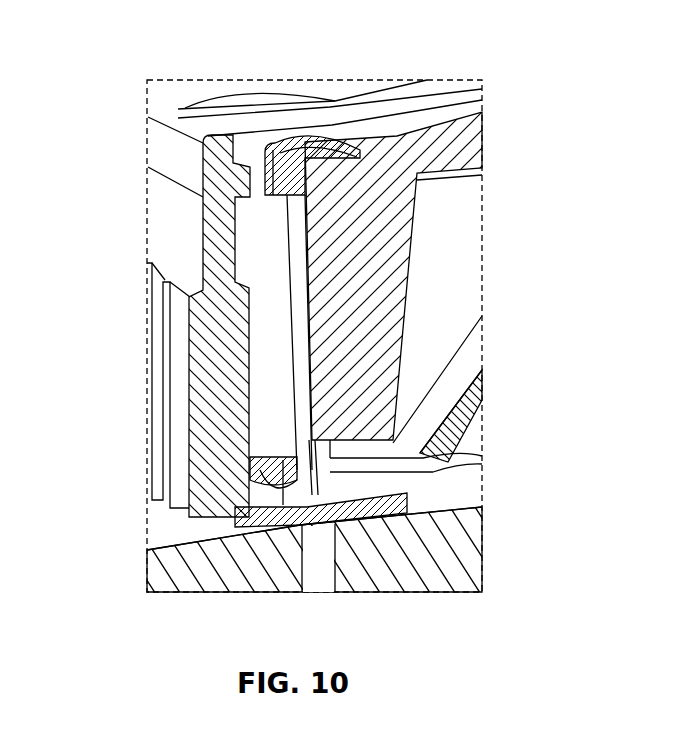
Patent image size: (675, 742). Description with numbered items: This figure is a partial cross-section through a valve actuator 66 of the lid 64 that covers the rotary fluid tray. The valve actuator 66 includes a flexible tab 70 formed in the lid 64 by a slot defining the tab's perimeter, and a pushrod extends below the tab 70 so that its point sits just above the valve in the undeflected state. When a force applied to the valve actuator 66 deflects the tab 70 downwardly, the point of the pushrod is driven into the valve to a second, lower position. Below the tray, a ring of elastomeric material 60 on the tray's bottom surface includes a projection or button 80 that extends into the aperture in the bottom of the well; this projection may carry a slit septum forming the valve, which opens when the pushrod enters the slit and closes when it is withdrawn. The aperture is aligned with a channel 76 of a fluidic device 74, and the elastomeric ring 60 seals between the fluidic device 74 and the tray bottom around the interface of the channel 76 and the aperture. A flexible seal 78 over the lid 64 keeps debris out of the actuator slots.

The ring of elastomeric material 60 is at (147, 551).
The lid 64 is at (228, 138).
The valve actuator 66 is at (312, 131).
The flexible tab 70 is at (423, 121).
The fluidic device 74 is at (147, 569).
The channel 76 is at (312, 566).
The flexible seal 78 is at (377, 115).
The projection or button 80 is at (482, 457).